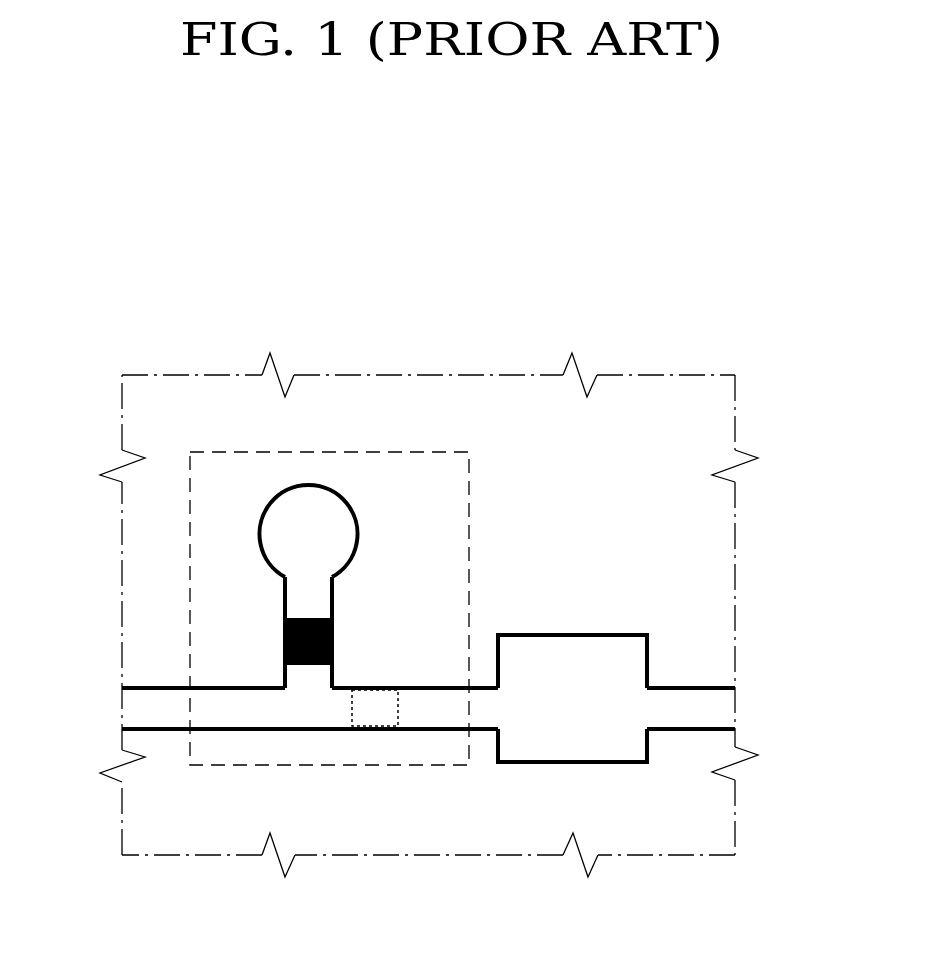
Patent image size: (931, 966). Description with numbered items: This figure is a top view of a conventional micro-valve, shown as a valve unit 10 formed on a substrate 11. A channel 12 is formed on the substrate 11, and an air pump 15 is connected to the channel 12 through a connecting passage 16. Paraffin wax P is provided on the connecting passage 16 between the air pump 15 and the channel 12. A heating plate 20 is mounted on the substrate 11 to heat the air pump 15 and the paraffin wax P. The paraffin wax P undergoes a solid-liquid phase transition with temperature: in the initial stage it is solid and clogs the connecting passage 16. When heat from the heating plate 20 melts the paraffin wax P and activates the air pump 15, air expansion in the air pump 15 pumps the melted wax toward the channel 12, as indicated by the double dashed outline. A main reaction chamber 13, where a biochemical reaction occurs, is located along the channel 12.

The valve unit 10 is at (712, 313).
The substrate 11 is at (700, 542).
The channel 12 is at (433, 730).
The main reaction chamber 13 is at (613, 762).
The air pump 15 is at (285, 527).
The connecting passage 16 is at (310, 682).
The heating plate 20 is at (353, 452).
The paraffin wax P is at (285, 642).